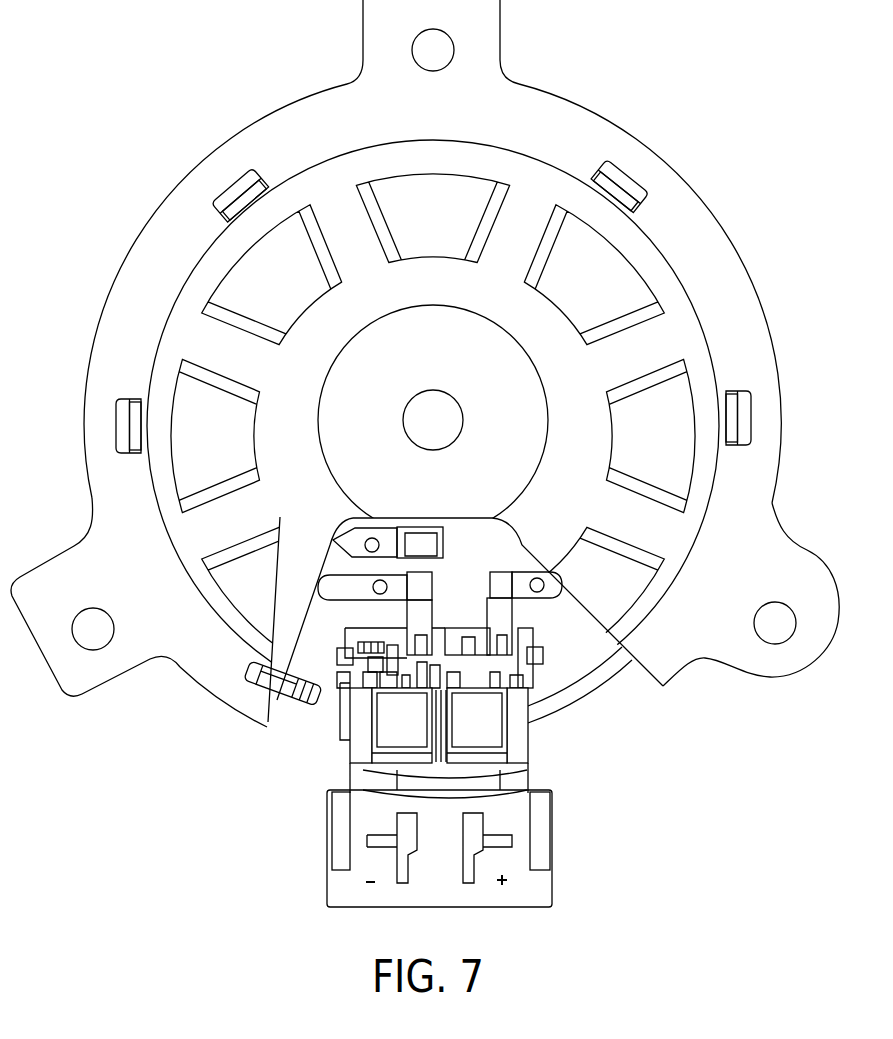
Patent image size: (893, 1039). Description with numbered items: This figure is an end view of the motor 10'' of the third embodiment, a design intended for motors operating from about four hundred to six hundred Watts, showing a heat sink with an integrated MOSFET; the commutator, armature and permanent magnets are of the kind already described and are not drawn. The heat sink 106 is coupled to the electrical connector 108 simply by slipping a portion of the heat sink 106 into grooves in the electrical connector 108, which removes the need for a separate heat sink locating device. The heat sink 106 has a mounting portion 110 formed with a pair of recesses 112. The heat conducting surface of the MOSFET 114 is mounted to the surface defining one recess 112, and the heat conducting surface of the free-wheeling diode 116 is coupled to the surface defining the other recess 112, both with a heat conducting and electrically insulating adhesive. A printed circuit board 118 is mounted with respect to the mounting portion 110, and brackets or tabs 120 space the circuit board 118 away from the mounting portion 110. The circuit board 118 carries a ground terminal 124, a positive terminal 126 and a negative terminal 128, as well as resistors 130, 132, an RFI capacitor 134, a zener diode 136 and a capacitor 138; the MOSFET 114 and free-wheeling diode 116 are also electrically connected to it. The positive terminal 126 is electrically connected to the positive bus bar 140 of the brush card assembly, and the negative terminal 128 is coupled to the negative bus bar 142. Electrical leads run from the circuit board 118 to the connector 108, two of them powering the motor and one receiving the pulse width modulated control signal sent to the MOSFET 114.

The motor 10'' is at (711, 84).
The heat sink 106 is at (500, 760).
The electrical connector 108 is at (510, 827).
The mounting portion 110 is at (380, 767).
The recesses 112 is at (397, 770).
The MOSFET 114 is at (375, 722).
The free-wheeling diode 116 is at (492, 733).
The printed circuit board 118 is at (537, 632).
The brackets or tabs 120 is at (337, 660).
The ground terminal 124 is at (317, 707).
The positive terminal 126 is at (507, 617).
The negative terminal 128 is at (428, 617).
The resistor 130 is at (427, 687).
The resistor 132 is at (383, 640).
The RFI capacitor 134 is at (465, 637).
The zener diode 136 is at (358, 642).
The capacitor 138 is at (340, 645).
The positive bus bar 140 is at (558, 587).
The negative bus bar 142 is at (397, 576).